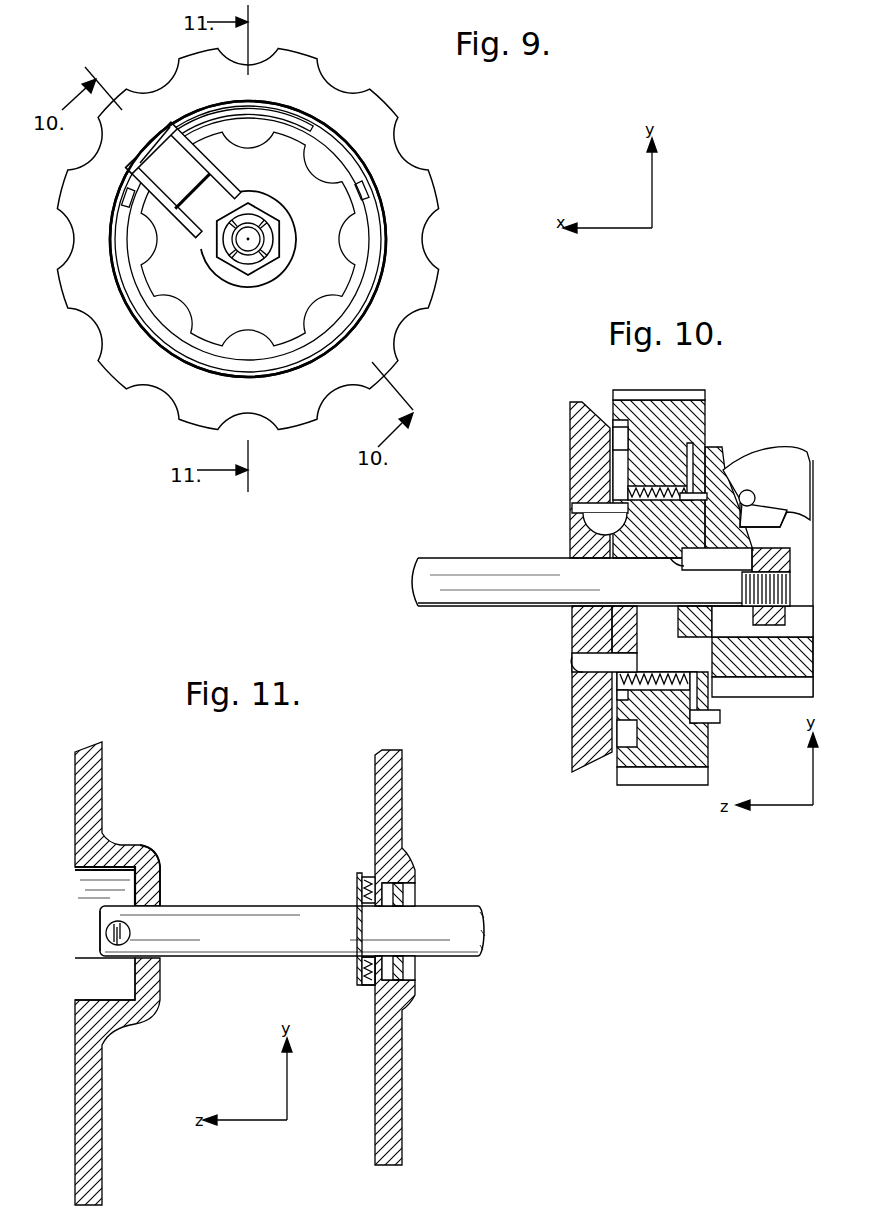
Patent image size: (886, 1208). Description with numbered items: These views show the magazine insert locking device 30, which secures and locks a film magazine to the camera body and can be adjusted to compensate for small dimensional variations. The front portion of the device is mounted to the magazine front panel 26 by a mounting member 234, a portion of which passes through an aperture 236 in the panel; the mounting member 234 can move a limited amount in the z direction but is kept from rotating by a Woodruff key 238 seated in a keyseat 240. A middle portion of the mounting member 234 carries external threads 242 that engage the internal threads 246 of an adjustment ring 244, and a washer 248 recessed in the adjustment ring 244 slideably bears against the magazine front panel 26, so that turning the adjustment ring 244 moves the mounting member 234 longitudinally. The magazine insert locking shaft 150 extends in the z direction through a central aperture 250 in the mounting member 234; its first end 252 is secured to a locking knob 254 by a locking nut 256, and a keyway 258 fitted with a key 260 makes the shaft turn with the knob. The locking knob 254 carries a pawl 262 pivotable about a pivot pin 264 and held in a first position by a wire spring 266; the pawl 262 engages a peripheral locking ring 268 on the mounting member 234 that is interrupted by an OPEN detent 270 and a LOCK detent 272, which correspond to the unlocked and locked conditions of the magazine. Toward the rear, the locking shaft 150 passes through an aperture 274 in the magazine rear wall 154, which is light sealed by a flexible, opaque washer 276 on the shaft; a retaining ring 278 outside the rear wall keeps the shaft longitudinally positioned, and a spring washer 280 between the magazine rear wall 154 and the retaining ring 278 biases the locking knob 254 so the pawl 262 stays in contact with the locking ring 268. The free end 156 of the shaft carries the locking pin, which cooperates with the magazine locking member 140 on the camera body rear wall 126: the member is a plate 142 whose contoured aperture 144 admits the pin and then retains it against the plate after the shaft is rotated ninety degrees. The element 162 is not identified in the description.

In FIG. 10, the magazine front panel 26 is at (585, 732).
In FIG. 9, the magazine insert locking device 30 is at (385, 72).
In FIG. 10, the magazine insert locking device 30 is at (798, 417).
In FIG. 11, the rear wall 126 is at (102, 770).
In FIG. 11, the magazine locking member 140 is at (190, 796).
In FIG. 11, the plate 142 is at (155, 868).
In FIG. 11, the aperture 144 is at (160, 906).
In FIG. 10, the magazine insert locking shaft 150 is at (463, 612).
In FIG. 11, the magazine insert locking shaft 150 is at (458, 912).
In FIG. 11, the magazine rear wall 154 is at (395, 812).
In FIG. 11, the free end 156 is at (100, 925).
In FIG. 11, the pin 162 is at (110, 940).
In FIG. 10, the mounting member 234 is at (573, 655).
In FIG. 10, the aperture 236 is at (573, 673).
In FIG. 10, the Woodruff key 238 is at (587, 507).
In FIG. 10, the keyseat 240 is at (570, 535).
In FIG. 10, the external threads 242 is at (662, 679).
In FIG. 9, the adjustment ring 244 is at (412, 297).
In FIG. 10, the adjustment ring 244 is at (663, 413).
In FIG. 10, the internal threads 246 is at (620, 697).
In FIG. 10, the washer 248 is at (615, 430).
In FIG. 10, the central aperture 250 is at (597, 637).
In FIG. 9, the first end 252 is at (256, 238).
In FIG. 10, the first end 252 is at (793, 597).
In FIG. 9, the locking knob 254 is at (203, 325).
In FIG. 10, the locking knob 254 is at (803, 667).
In FIG. 9, the locking nut 256 is at (225, 258).
In FIG. 10, the locking nut 256 is at (792, 565).
In FIG. 10, the keyway 258 is at (667, 563).
In FIG. 10, the key 260 is at (732, 566).
In FIG. 9, the pawl 262 is at (155, 158).
In FIG. 10, the pawl 262 is at (807, 465).
In FIG. 10, the pivot pin 264 is at (753, 492).
In FIG. 10, the wire spring 266 is at (795, 508).
In FIG. 9, the peripheral locking ring 268 is at (240, 367).
In FIG. 10, the peripheral locking ring 268 is at (717, 722).
In FIG. 9, the OPEN detent 270 is at (170, 127).
In FIG. 10, the OPEN detent 270 is at (723, 450).
In FIG. 9, the LOCK detent 272 is at (345, 157).
In FIG. 11, the aperture 274 is at (380, 985).
In FIG. 11, the flexible, opaque washer 276 is at (403, 962).
In FIG. 11, the retaining ring 278 is at (357, 888).
In FIG. 11, the spring washer 280 is at (368, 878).